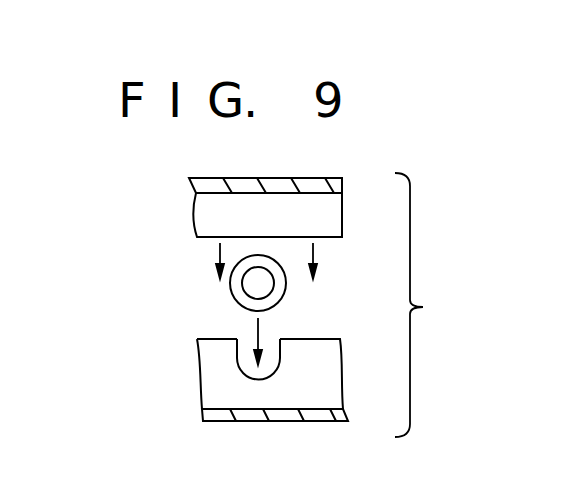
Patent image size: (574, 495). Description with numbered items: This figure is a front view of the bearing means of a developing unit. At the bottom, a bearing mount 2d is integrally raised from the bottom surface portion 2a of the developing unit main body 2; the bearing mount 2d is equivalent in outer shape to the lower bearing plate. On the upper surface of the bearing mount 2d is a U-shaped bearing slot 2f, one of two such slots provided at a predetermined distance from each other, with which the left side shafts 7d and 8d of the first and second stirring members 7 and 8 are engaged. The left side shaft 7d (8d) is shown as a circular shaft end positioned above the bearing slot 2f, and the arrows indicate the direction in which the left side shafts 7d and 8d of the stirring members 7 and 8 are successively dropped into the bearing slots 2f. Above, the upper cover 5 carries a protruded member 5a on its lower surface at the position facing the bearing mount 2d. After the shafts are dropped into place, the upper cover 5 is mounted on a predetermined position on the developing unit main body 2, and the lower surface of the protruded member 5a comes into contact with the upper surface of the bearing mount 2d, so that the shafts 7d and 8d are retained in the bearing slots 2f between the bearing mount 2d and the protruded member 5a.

The upper cover 5 is at (304, 182).
The protruded member 5a is at (220, 215).
The first stirring member 7 is at (305, 273).
The second stirring member 8 is at (287, 285).
The left side shaft 7d is at (190, 267).
The left side shaft 8d is at (247, 287).
The developing unit main body 2 is at (276, 424).
The bottom surface portion 2a is at (322, 409).
The bearing mount 2d is at (197, 370).
The bearing slot 2f is at (245, 340).